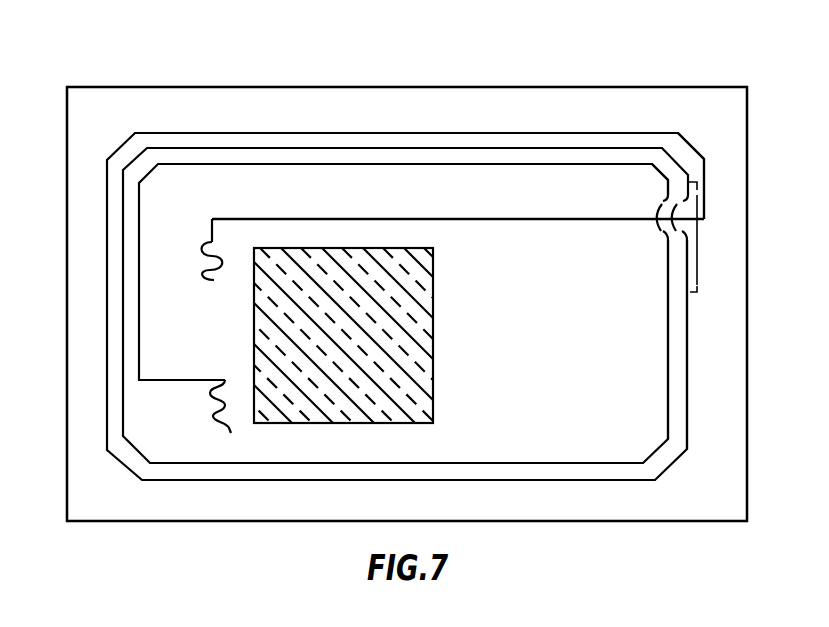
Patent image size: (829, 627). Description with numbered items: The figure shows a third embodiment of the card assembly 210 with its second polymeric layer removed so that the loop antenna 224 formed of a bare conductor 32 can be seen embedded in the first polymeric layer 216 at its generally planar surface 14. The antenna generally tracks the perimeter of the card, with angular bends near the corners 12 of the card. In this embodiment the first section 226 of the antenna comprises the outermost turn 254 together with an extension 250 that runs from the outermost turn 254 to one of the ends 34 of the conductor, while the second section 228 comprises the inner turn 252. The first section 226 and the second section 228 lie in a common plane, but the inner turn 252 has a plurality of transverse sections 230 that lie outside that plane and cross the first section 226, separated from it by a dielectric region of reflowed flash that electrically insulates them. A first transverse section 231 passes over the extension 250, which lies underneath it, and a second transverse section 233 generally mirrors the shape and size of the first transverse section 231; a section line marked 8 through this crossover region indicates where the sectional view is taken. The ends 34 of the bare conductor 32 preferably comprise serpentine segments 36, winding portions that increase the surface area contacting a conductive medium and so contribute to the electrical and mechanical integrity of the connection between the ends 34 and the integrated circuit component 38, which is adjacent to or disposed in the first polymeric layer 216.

The card assembly 210 is at (414, 54).
The corners 12 is at (67, 87).
The planar surface 14 is at (735, 451).
The first polymeric layer 216 is at (734, 352).
The loop antenna 224 is at (222, 117).
The first section 226 is at (692, 147).
The second section 228 is at (650, 147).
The outermost turn 254 is at (465, 131).
The inner turn 252 is at (487, 166).
The extension 250 is at (277, 218).
The bare conductor 32 is at (447, 481).
The ends 34 is at (200, 277).
The serpentine segments 36 is at (215, 273).
The integrated circuit component 38 is at (424, 335).
The transverse sections 230 is at (657, 230).
The second transverse section 233 is at (656, 212).
The first transverse section 231 is at (683, 243).
The section line for FIG. 8 is at (690, 181).